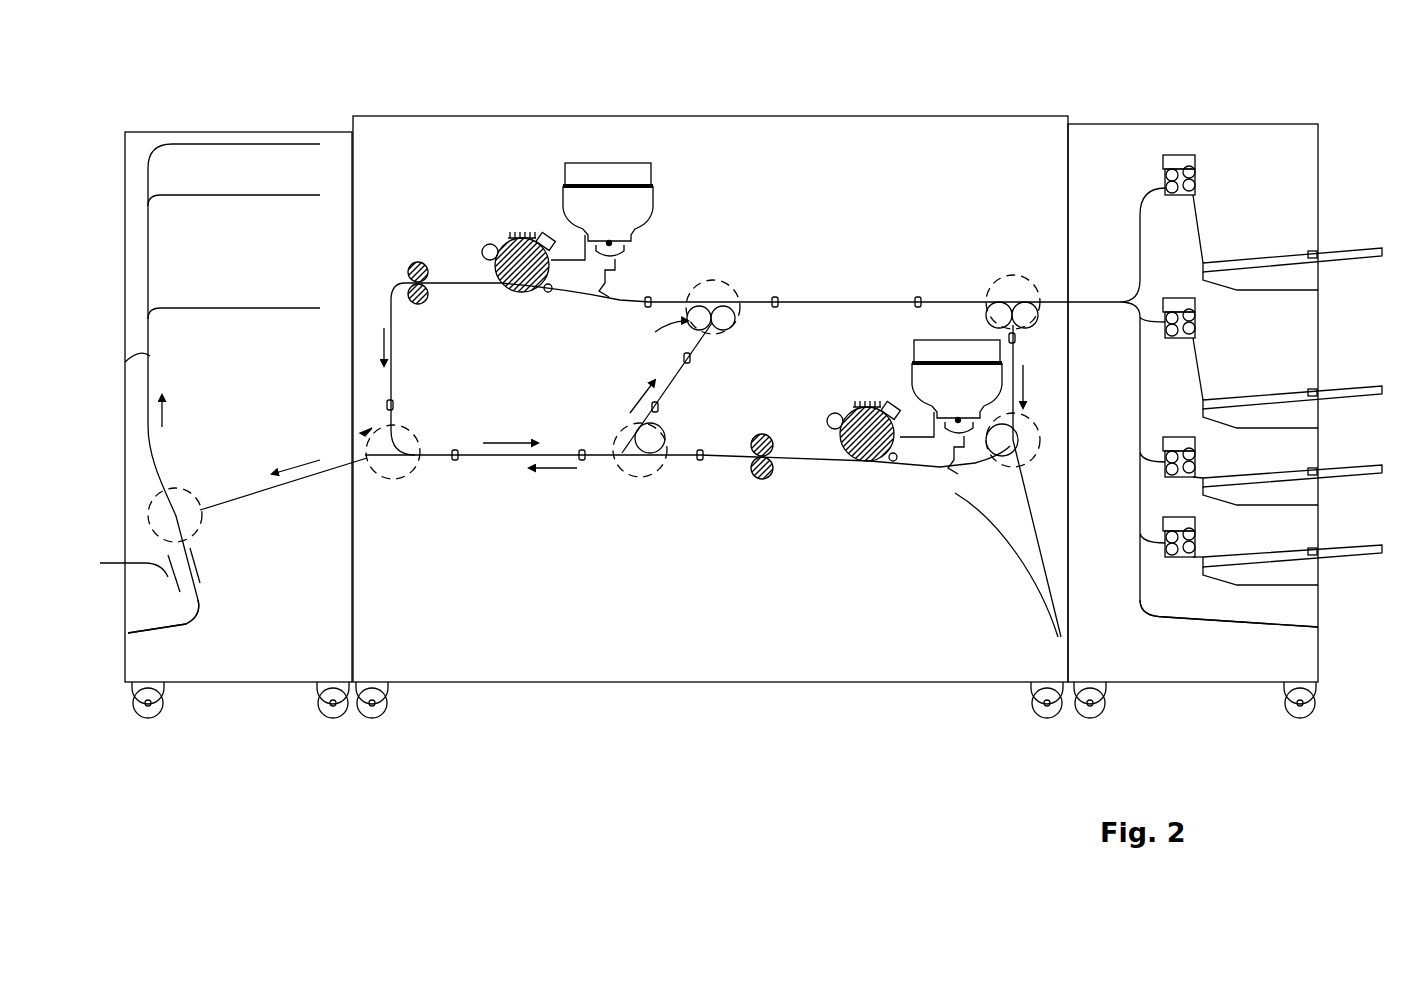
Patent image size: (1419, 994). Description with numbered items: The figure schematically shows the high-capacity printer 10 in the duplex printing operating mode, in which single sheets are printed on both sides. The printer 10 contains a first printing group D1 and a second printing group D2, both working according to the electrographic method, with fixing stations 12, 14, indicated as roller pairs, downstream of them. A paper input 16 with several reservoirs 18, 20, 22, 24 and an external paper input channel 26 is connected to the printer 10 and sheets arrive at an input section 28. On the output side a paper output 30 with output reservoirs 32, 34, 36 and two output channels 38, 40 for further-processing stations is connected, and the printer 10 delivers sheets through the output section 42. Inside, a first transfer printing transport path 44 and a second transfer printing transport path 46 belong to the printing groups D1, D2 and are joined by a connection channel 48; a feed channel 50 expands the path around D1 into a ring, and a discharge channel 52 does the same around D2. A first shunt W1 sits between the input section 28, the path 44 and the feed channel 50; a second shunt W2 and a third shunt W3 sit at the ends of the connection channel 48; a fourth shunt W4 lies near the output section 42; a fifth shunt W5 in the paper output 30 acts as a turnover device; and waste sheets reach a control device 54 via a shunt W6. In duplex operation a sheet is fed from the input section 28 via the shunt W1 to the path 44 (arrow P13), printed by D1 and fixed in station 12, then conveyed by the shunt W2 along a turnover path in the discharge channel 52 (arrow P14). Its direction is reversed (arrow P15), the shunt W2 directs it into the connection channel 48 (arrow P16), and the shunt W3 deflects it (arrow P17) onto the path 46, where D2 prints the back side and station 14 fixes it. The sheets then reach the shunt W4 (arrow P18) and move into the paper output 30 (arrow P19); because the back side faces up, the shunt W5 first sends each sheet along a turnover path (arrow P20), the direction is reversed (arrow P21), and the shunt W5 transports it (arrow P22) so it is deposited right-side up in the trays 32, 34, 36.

The high-capacity printer 10 is at (935, 112).
The fixing station 12 is at (762, 481).
The fixing station 14 is at (422, 305).
The paper input 16 is at (1265, 124).
The reservoir 18 is at (1258, 291).
The reservoir 20 is at (1255, 421).
The reservoir 22 is at (1256, 500).
The reservoir 24 is at (1258, 580).
The external paper input channel 26 is at (1255, 623).
The input section 28 is at (1048, 294).
The paper output 30 is at (222, 131).
The output reservoir 32 is at (215, 146).
The output reservoir 34 is at (198, 197).
The output reservoir 36 is at (213, 310).
The output channel 38 is at (202, 606).
The output channel 40 is at (140, 350).
The output section 42 is at (360, 433).
The first transfer printing transport path 44 is at (918, 470).
The second transfer printing transport path 46 is at (575, 302).
The connection channel 48 is at (678, 386).
The feed channel 50 is at (878, 301).
The discharge channel 52 is at (490, 457).
The control device 54 is at (1000, 576).
The first printing group D1 is at (901, 445).
The second printing group D2 is at (567, 244).
The first shunt W1 is at (1003, 283).
The second shunt W2 is at (628, 480).
The third shunt W3 is at (712, 283).
The fourth shunt W4 is at (414, 432).
The fifth shunt W5 is at (193, 536).
The shunt W6 is at (1040, 430).
The arrow P13 is at (1030, 380).
The arrow P14 is at (557, 476).
The arrow P15 is at (513, 444).
The arrow P16 is at (642, 396).
The arrow P17 is at (685, 323).
The arrow P18 is at (382, 334).
The arrow P19 is at (297, 464).
The arrow P20 is at (203, 568).
The arrow P21 is at (132, 561).
The arrow P22 is at (165, 408).